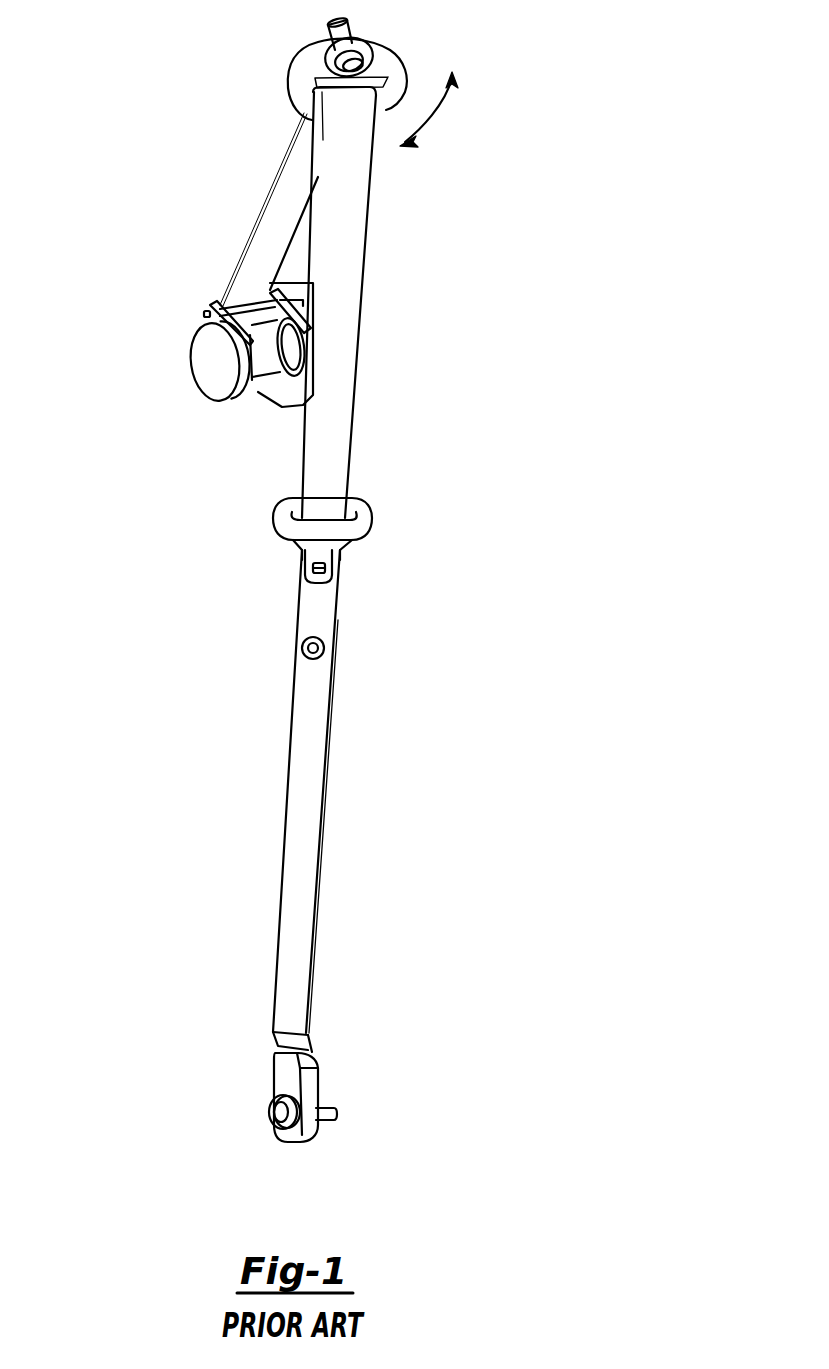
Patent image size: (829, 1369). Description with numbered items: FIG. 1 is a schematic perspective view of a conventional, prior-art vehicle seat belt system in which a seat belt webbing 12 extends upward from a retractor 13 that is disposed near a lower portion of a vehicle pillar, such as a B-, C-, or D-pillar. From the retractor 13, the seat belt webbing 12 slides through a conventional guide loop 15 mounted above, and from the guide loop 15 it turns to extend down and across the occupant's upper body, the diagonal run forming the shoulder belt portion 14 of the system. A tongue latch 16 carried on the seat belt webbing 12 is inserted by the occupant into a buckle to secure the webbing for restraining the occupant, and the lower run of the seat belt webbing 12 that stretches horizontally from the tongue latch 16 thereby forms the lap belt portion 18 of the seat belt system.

The seat belt webbing 12 is at (270, 232).
The retractor 13 is at (207, 372).
The shoulder belt portion 14 is at (343, 357).
The guide loop 15 is at (383, 62).
The tongue latch 16 is at (323, 552).
The lap belt portion 18 is at (307, 850).